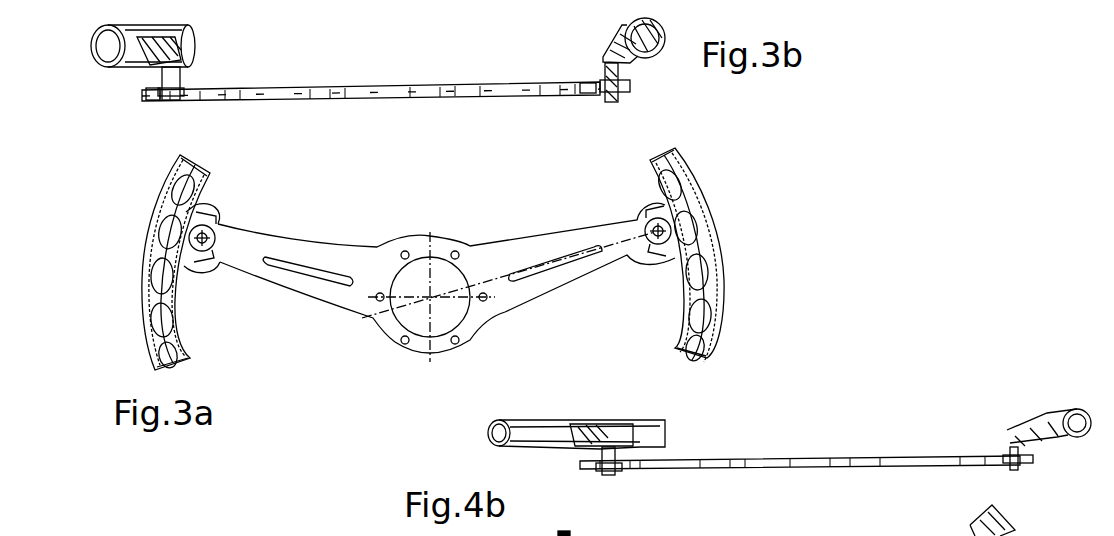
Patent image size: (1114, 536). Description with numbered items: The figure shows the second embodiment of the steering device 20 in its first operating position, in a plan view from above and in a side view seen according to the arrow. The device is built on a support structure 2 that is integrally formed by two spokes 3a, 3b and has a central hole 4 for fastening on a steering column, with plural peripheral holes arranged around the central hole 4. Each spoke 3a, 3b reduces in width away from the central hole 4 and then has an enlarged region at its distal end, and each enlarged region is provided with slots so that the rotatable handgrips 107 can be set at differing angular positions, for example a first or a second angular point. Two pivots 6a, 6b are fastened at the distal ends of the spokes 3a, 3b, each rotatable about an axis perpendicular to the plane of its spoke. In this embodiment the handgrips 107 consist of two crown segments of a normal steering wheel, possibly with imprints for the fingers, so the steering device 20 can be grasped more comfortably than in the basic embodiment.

In FIG. 3A, the support structure 2 is at (429, 330).
In FIG. 3A, the spoke 3a is at (296, 209).
In FIG. 3A, the spoke 3b is at (534, 205).
In FIG. 3A, the central hole 4 is at (508, 311).
In FIG. 3B, the pivot 6a is at (211, 113).
In FIG. 3B, the pivot 6b is at (542, 114).
In FIG. 3B, the steering device 20 is at (790, 108).
In FIG. 3B, the handgrip 107 is at (479, 143).
In FIG. 3A, the handgrip 107 is at (434, 259).